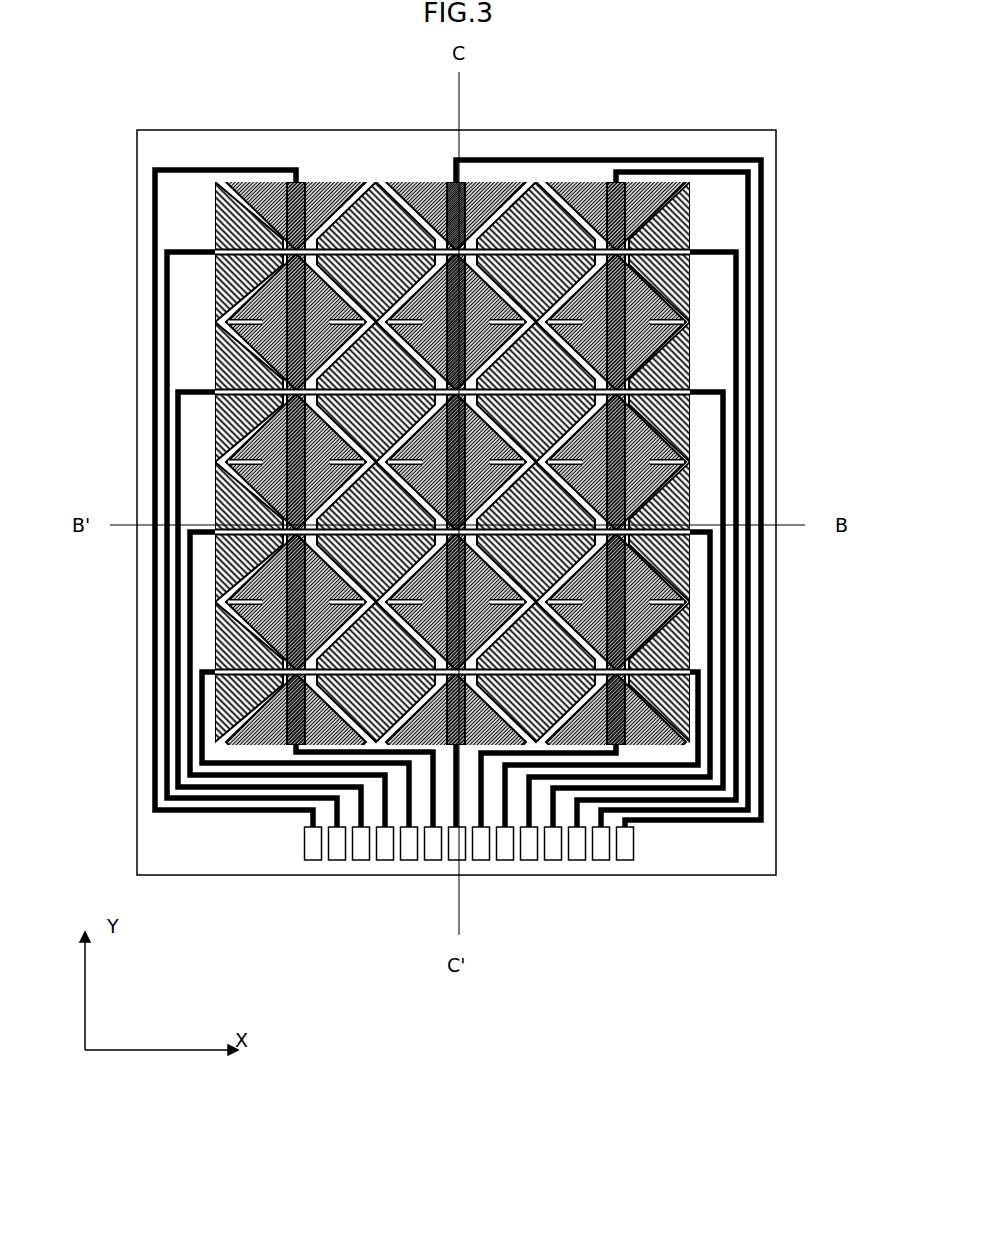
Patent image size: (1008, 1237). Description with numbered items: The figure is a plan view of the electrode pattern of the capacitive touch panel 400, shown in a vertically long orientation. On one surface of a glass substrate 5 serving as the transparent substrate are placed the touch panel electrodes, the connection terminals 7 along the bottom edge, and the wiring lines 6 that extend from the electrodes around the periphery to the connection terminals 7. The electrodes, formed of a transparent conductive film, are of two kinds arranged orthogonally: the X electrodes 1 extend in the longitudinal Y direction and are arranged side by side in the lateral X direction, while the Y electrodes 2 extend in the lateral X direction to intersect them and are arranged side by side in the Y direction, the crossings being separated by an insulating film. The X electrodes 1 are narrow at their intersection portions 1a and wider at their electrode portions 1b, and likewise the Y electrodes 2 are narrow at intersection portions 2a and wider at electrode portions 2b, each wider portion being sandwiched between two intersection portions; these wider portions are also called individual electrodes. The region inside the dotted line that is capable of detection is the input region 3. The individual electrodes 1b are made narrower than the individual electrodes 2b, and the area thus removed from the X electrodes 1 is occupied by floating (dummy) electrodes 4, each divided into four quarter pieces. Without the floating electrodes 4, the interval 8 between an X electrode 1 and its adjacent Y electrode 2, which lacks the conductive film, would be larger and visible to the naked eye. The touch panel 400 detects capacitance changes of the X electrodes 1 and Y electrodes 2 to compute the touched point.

The X electrodes 1 is at (692, 265).
The intersection portions 1a is at (692, 228).
The electrode portions 1b is at (692, 307).
The Y electrodes 2 is at (673, 383).
The intersection portions 2a is at (585, 222).
The electrode portions 2b is at (360, 222).
The input region 3 is at (411, 190).
The floating electrodes 4 is at (692, 445).
The glass substrate 5 is at (690, 130).
The wiring lines 6 is at (776, 647).
The connection terminals 7 is at (579, 861).
The interval 8 is at (665, 487).
The touch panel 400 is at (315, 887).